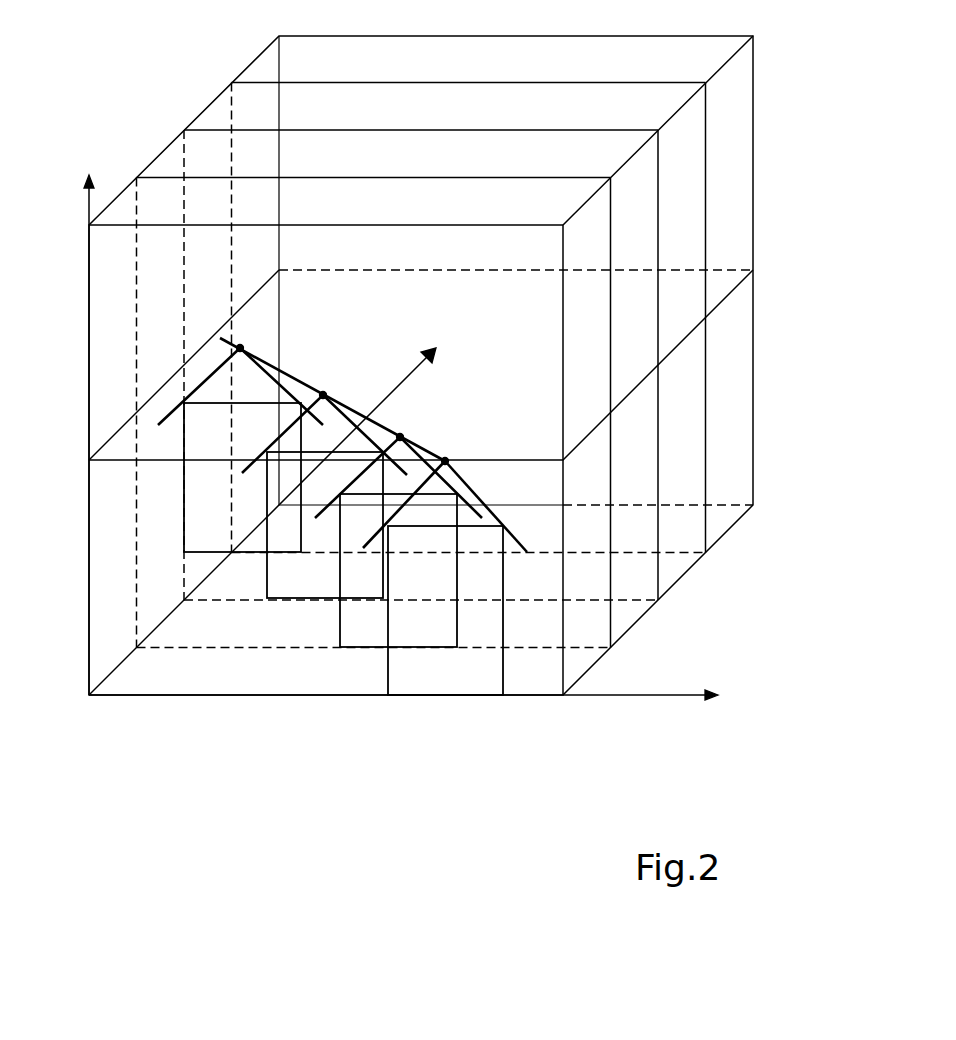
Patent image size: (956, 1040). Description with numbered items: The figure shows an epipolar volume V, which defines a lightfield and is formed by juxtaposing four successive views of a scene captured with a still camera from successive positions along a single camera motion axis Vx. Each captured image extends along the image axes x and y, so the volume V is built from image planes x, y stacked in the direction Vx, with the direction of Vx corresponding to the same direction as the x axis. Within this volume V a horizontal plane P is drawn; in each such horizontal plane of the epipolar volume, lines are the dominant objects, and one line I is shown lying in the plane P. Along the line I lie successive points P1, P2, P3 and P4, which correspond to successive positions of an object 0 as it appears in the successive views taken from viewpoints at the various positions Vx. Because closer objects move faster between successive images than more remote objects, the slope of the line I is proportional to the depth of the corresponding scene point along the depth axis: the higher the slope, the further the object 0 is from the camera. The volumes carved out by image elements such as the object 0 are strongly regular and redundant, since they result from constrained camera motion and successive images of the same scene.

The epipolar volume V is at (738, 130).
The horizontal plane P is at (720, 303).
The line I is at (290, 378).
The point P1 is at (445, 461).
The point P2 is at (400, 437).
The point P3 is at (323, 395).
The point P4 is at (240, 348).
The object 0 is at (483, 502).
The camera position axis Vx is at (275, 506).
The x axis x is at (403, 716).
The y axis y is at (70, 427).